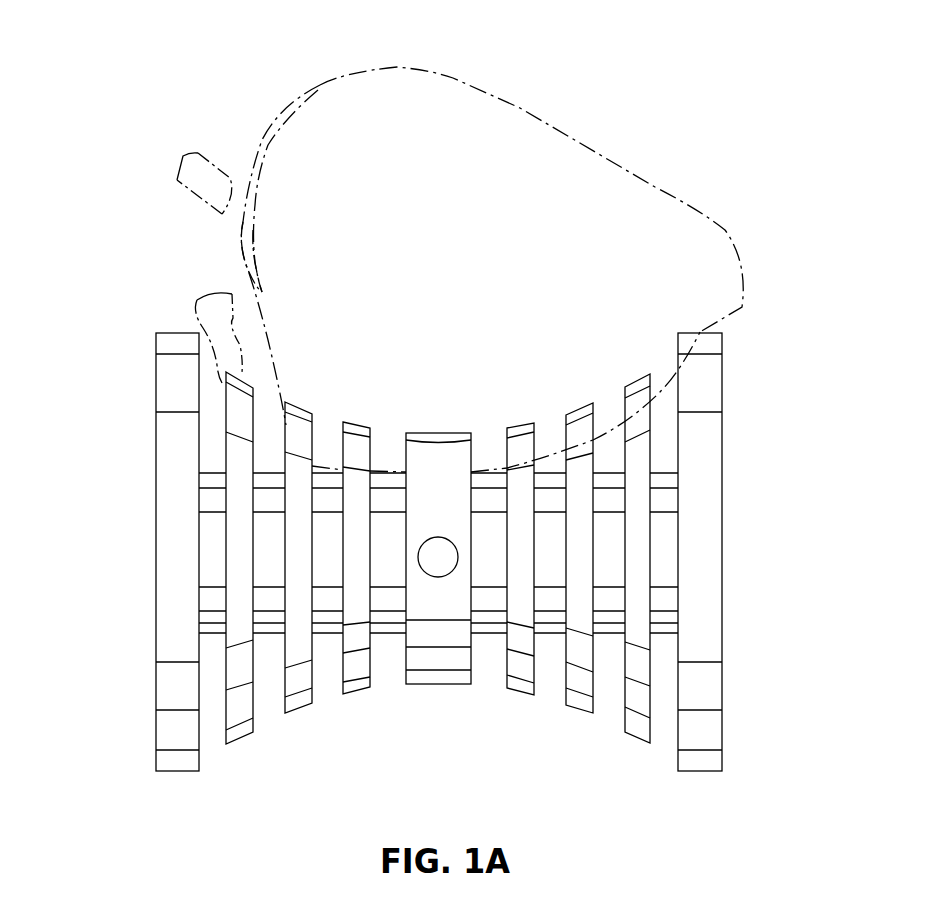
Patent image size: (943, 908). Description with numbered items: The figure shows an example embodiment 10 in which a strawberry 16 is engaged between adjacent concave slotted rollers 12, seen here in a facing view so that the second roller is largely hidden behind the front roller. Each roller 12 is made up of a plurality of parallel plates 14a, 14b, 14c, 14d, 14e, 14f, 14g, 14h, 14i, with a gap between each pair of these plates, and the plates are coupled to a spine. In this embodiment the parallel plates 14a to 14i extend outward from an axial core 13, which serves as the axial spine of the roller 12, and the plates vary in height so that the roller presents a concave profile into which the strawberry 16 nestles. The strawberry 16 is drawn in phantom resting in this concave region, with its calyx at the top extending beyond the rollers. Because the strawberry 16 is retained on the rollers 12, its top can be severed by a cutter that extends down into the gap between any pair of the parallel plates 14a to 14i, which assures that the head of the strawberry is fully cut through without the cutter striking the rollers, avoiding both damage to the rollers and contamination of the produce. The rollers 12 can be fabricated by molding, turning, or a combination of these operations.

The example embodiment 10 is at (118, 74).
The concave slotted roller 12 is at (733, 368).
The axial core 13 is at (490, 633).
The parallel plate 14a is at (155, 750).
The parallel plate 14b is at (238, 745).
The parallel plate 14c is at (298, 715).
The parallel plate 14d is at (358, 695).
The parallel plate 14e is at (451, 685).
The parallel plate 14f is at (515, 692).
The parallel plate 14g is at (577, 710).
The parallel plate 14h is at (634, 738).
The parallel plate 14i is at (690, 775).
The strawberry 16 is at (662, 178).